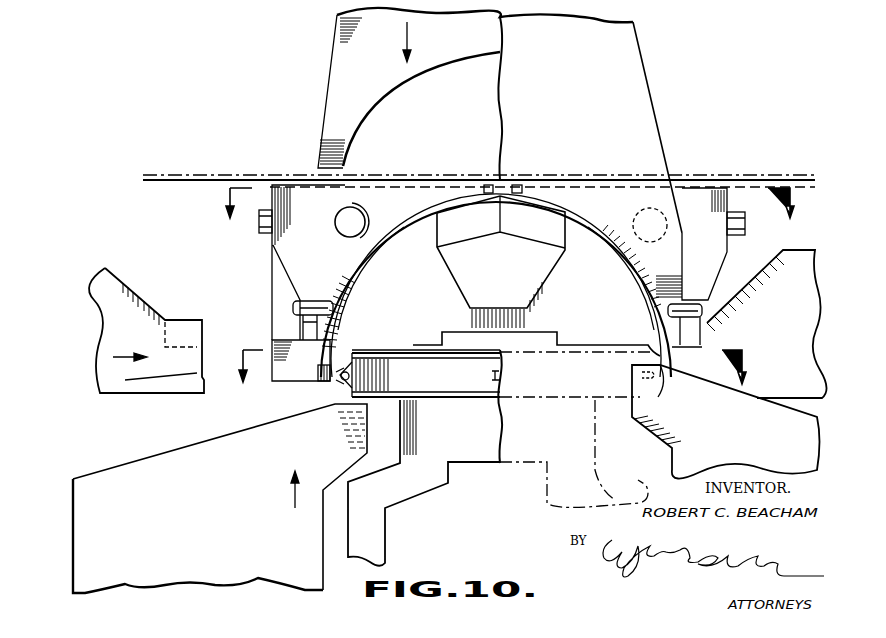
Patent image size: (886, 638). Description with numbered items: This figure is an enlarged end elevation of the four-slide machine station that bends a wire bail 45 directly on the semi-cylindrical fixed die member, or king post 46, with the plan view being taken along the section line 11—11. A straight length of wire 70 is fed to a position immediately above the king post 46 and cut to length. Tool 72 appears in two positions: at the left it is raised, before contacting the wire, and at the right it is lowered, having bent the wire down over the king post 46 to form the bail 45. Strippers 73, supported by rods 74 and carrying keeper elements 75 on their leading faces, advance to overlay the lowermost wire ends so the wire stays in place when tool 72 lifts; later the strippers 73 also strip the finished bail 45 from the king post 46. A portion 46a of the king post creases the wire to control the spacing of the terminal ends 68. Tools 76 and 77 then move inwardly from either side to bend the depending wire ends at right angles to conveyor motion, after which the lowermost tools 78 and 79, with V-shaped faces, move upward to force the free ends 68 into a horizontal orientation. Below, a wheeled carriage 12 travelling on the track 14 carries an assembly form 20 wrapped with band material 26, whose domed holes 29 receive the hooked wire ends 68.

The wire 70 is at (202, 180).
The tool 72 is at (320, 88).
The strippers 73 is at (329, 276).
The rods 74 is at (347, 232).
The keeper elements 75 is at (298, 307).
The wire bail 45 is at (338, 334).
The portion of king post 46a is at (538, 278).
The king post 46 is at (607, 330).
The assembly form 20 is at (423, 350).
The band material 26 is at (438, 388).
The holes 29 is at (351, 374).
The terminal ends 68 is at (330, 385).
The lowermost tool 79 is at (319, 451).
The wheeled carriage 12 is at (409, 497).
The lowermost tool 78 is at (716, 432).
The tool 76 is at (787, 352).
The tool 77 is at (146, 341).
The section line 11— 11 is at (508, 215).
The track 14 is at (498, 378).